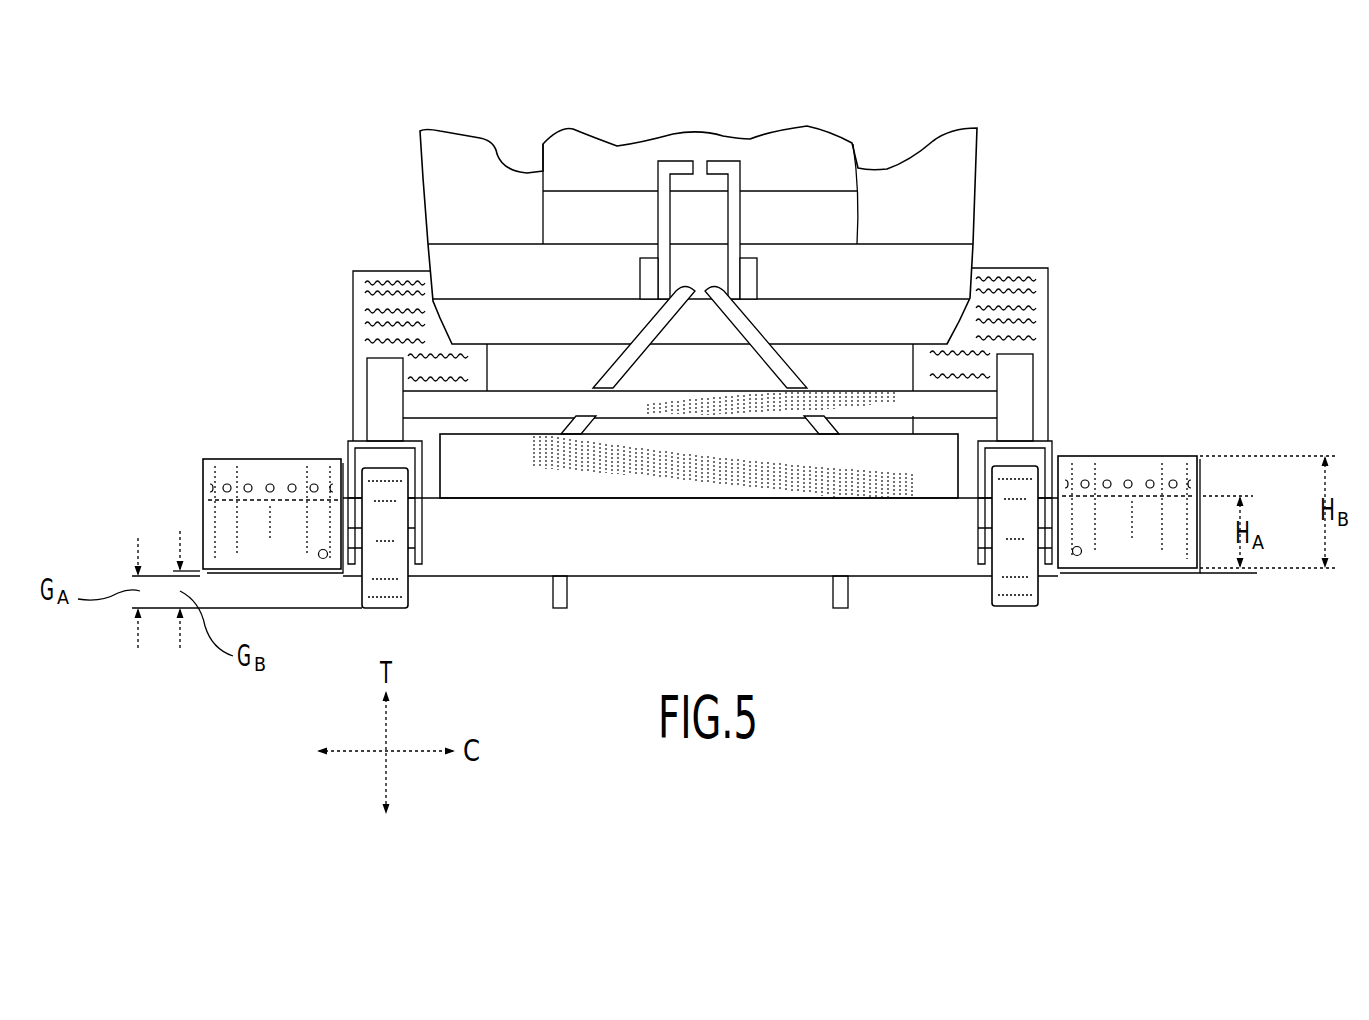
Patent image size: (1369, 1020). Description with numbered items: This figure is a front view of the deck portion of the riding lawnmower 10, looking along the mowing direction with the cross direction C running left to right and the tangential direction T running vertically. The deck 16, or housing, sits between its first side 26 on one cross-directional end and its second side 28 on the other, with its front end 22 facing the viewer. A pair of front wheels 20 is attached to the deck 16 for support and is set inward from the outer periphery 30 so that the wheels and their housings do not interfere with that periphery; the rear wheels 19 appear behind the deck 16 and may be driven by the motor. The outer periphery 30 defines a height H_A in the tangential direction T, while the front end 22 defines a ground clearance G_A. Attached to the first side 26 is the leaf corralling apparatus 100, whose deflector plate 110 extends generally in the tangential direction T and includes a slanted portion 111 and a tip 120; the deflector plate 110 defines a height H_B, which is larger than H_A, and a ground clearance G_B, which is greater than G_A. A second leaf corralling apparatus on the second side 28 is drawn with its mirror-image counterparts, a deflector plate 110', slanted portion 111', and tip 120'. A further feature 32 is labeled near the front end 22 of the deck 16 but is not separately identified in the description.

The lawnmower 10 is at (150, 103).
The deck 16 is at (517, 497).
The rear wheels 19 is at (1037, 288).
The front wheels 20 is at (1016, 594).
The front end 22 is at (718, 549).
The first side 26 is at (1266, 427).
The second side 28 is at (150, 403).
The outer periphery 30 is at (600, 553).
The right support leg 32 is at (807, 557).
The leaf corralling apparatus 100 is at (1198, 420).
The deflector plate 110 is at (1102, 450).
The slanted portion 111 is at (1170, 450).
The tip 120 is at (1179, 507).
The plate 110' is at (304, 459).
The fastener 111' is at (248, 444).
The bar 120' is at (255, 459).